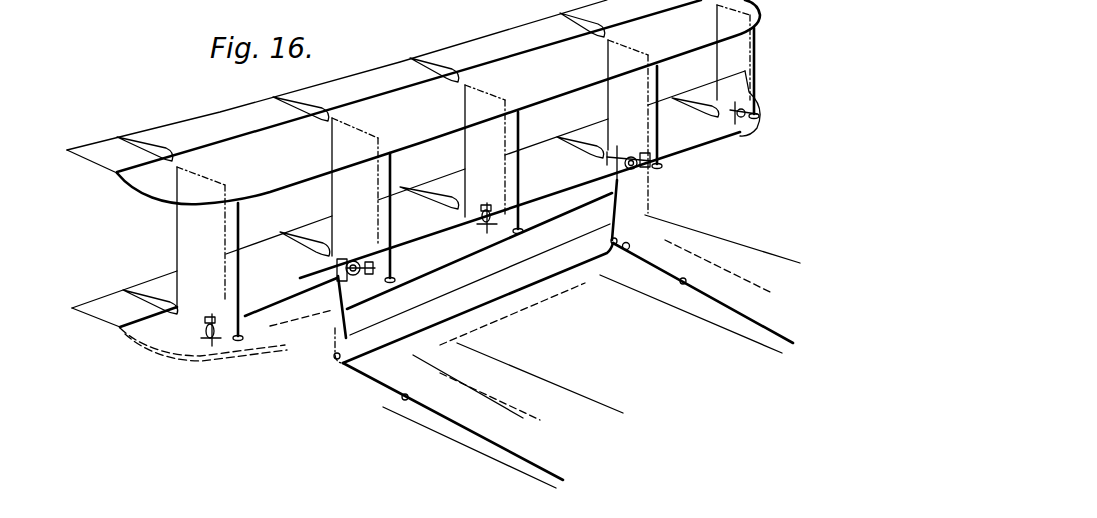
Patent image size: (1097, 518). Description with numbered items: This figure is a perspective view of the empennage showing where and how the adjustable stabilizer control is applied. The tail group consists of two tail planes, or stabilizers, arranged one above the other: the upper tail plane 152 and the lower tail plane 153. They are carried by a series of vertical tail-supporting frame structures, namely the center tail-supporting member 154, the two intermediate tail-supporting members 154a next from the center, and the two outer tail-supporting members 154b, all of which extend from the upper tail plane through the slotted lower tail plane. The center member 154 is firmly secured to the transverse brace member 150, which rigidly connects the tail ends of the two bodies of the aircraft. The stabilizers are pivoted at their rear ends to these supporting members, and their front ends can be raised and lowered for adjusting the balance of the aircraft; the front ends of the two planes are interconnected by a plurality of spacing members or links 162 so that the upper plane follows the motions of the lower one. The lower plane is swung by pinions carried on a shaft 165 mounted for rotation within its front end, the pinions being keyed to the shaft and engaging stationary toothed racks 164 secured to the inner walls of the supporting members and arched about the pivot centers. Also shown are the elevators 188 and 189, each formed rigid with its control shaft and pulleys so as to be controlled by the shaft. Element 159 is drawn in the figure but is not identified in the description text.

The transverse brace member 150 is at (556, 297).
The upper tail plane 152 is at (650, 13).
The lower tail plane 153 is at (717, 145).
The center tail-supporting member 154 is at (512, 181).
The intermediate tail-supporting member 154a is at (393, 236).
The outer tail-supporting member 154b is at (240, 262).
The cable 159 is at (455, 255).
The spacing member or link 162 is at (520, 183).
The stationary toothed rack 164 is at (232, 298).
The shaft 165 is at (456, 231).
The elevator 188 is at (477, 51).
The elevator 189 is at (434, 186).